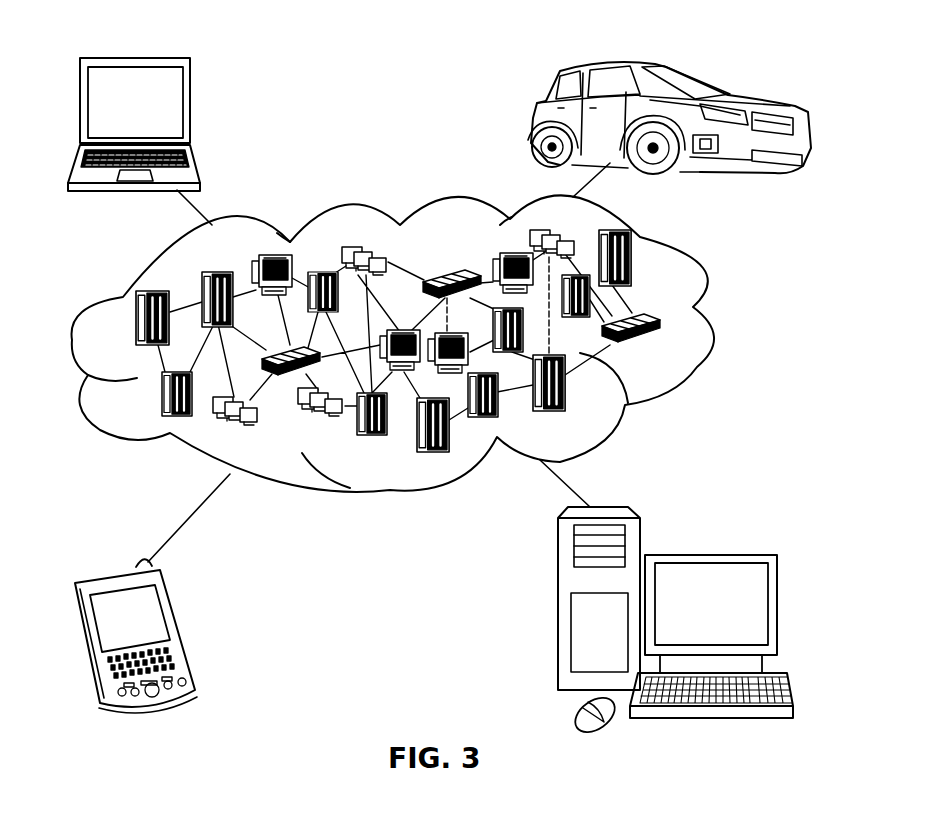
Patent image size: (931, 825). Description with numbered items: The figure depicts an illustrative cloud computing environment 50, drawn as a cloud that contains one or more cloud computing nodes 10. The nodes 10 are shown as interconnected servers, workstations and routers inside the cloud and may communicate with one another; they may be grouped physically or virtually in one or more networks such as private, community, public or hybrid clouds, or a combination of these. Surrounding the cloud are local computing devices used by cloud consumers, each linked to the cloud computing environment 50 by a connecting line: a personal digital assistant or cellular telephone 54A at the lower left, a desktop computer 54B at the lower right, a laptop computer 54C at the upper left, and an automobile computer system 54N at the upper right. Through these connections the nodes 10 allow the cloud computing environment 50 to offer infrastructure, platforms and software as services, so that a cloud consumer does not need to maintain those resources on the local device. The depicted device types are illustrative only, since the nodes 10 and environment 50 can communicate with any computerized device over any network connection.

The cloud computing nodes 10 is at (660, 348).
The cloud computing environment 50 is at (710, 322).
The personal digital assistant (PDA) or cellular telephone 54A is at (182, 626).
The desktop computer 54B is at (707, 555).
The laptop computer 54C is at (192, 103).
The automobile computer system 54N is at (538, 119).